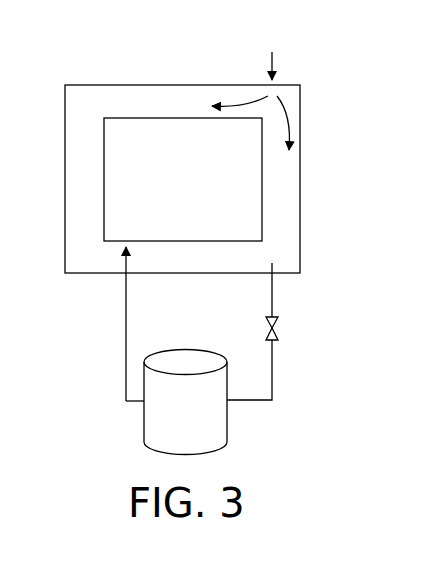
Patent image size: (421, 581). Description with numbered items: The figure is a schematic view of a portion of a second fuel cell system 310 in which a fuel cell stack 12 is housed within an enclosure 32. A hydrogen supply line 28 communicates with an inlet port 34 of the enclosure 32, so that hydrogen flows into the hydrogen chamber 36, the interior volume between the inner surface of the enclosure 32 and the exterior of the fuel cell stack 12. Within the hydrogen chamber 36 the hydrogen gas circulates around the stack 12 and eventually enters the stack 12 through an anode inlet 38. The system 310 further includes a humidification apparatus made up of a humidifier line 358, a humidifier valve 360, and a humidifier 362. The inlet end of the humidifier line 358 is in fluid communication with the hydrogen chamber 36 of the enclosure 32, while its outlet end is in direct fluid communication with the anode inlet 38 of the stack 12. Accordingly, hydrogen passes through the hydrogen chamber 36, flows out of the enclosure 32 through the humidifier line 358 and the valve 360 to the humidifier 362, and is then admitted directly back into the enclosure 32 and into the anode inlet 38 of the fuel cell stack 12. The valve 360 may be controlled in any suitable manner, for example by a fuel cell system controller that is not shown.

The second fuel cell system 310 is at (116, 66).
The enclosure 32 is at (160, 85).
The hydrogen chamber 36 is at (288, 222).
The fuel cell stack 12 is at (192, 184).
The hydrogen supply line 28 is at (272, 78).
The inlet port 34 is at (278, 83).
The anode inlet 38 is at (120, 245).
The humidifier line 358 is at (272, 353).
The humidifier valve 360 is at (278, 334).
The humidifier 362 is at (168, 418).